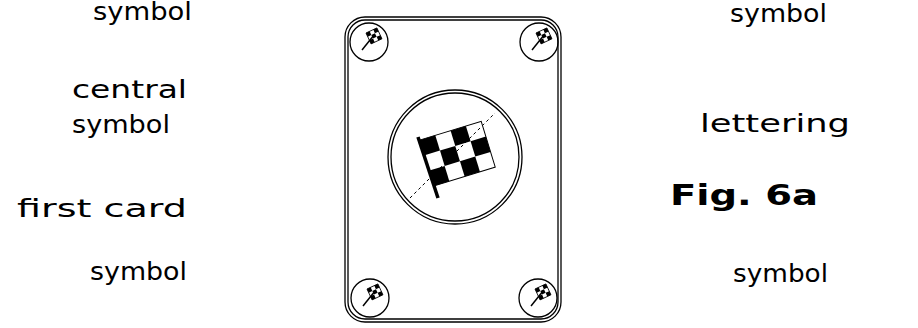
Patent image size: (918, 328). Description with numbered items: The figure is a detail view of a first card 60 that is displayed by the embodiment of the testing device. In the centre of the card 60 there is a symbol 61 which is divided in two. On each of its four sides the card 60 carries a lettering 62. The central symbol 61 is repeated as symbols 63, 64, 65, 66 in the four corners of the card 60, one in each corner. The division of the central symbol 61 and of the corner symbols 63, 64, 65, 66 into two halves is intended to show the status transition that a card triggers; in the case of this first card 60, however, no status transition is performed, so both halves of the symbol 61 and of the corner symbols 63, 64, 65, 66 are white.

The first card 60 is at (348, 225).
The symbol 61 is at (393, 130).
The lettering 62 is at (568, 152).
The symbol 63 is at (337, 32).
The symbol 64 is at (568, 32).
The symbol 65 is at (337, 290).
The symbol 66 is at (572, 292).